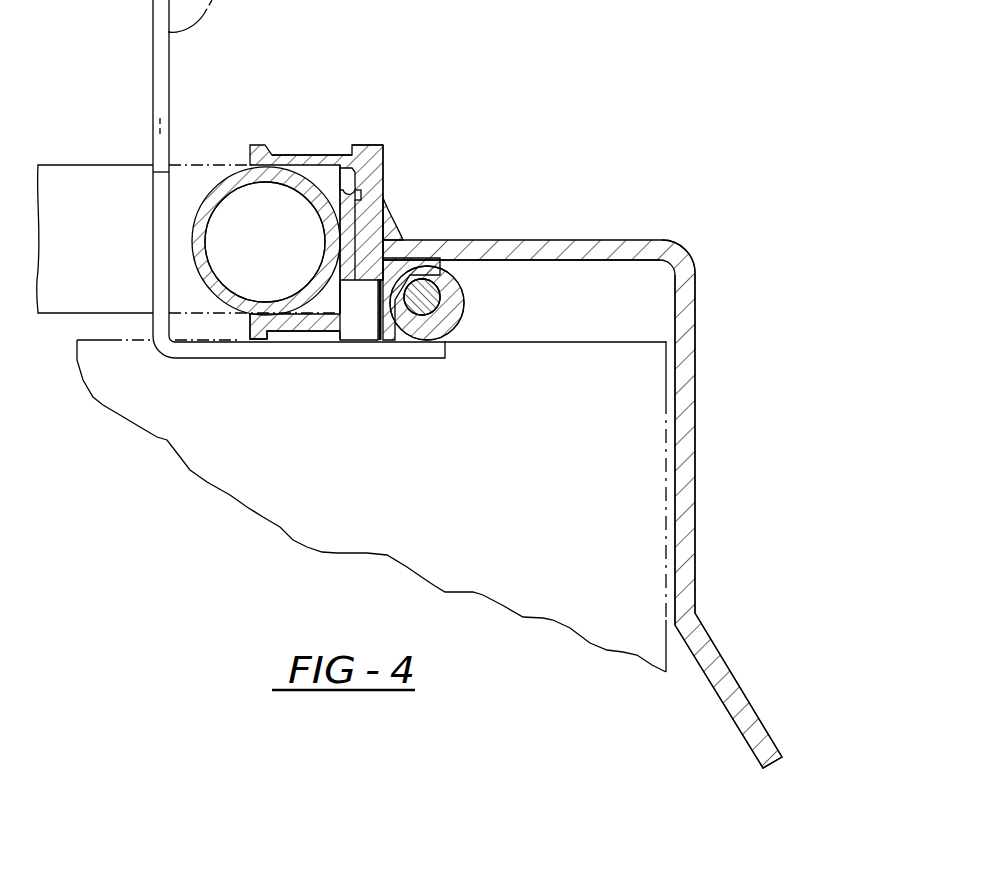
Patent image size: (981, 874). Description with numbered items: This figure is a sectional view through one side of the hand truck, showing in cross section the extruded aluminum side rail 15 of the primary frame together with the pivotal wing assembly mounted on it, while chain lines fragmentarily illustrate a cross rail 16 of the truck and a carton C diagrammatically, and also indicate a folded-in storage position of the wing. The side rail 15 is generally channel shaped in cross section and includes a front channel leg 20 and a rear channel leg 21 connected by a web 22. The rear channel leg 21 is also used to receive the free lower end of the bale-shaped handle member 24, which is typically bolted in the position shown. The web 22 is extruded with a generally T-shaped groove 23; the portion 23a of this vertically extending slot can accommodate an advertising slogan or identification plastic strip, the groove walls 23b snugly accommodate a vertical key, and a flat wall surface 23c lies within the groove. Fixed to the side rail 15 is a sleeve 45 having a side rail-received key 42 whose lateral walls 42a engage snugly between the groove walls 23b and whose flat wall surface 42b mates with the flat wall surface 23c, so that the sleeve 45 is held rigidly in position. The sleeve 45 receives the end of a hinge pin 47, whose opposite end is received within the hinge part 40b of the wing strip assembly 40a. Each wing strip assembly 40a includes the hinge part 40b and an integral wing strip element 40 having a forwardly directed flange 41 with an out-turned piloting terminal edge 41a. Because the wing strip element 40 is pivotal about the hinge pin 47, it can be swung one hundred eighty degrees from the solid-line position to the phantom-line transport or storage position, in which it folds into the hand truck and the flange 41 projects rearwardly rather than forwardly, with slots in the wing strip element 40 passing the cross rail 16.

The side rail 15 is at (332, 145).
The cross rail 16 is at (86, 166).
The front channel leg 20 is at (290, 341).
The rear channel leg 21 is at (290, 153).
The web 22 is at (378, 176).
The T-shaped groove 23 is at (390, 192).
The slot portion 23a is at (368, 150).
The groove walls 23b is at (385, 206).
The flat wall surface 23c is at (340, 232).
The handle member 24 is at (205, 176).
The wing strip element 40 is at (612, 240).
The wing strip assembly 40a is at (643, 240).
The hinge part 40b is at (453, 262).
The flange 41 is at (683, 424).
The piloting terminal edge 41a is at (705, 652).
The key 42 is at (402, 240).
The lateral walls 42a is at (385, 342).
The flat wall surface 42b is at (343, 342).
The sleeve 45 is at (461, 312).
The hinge pin 47 is at (426, 341).
The vehicle body C is at (318, 556).